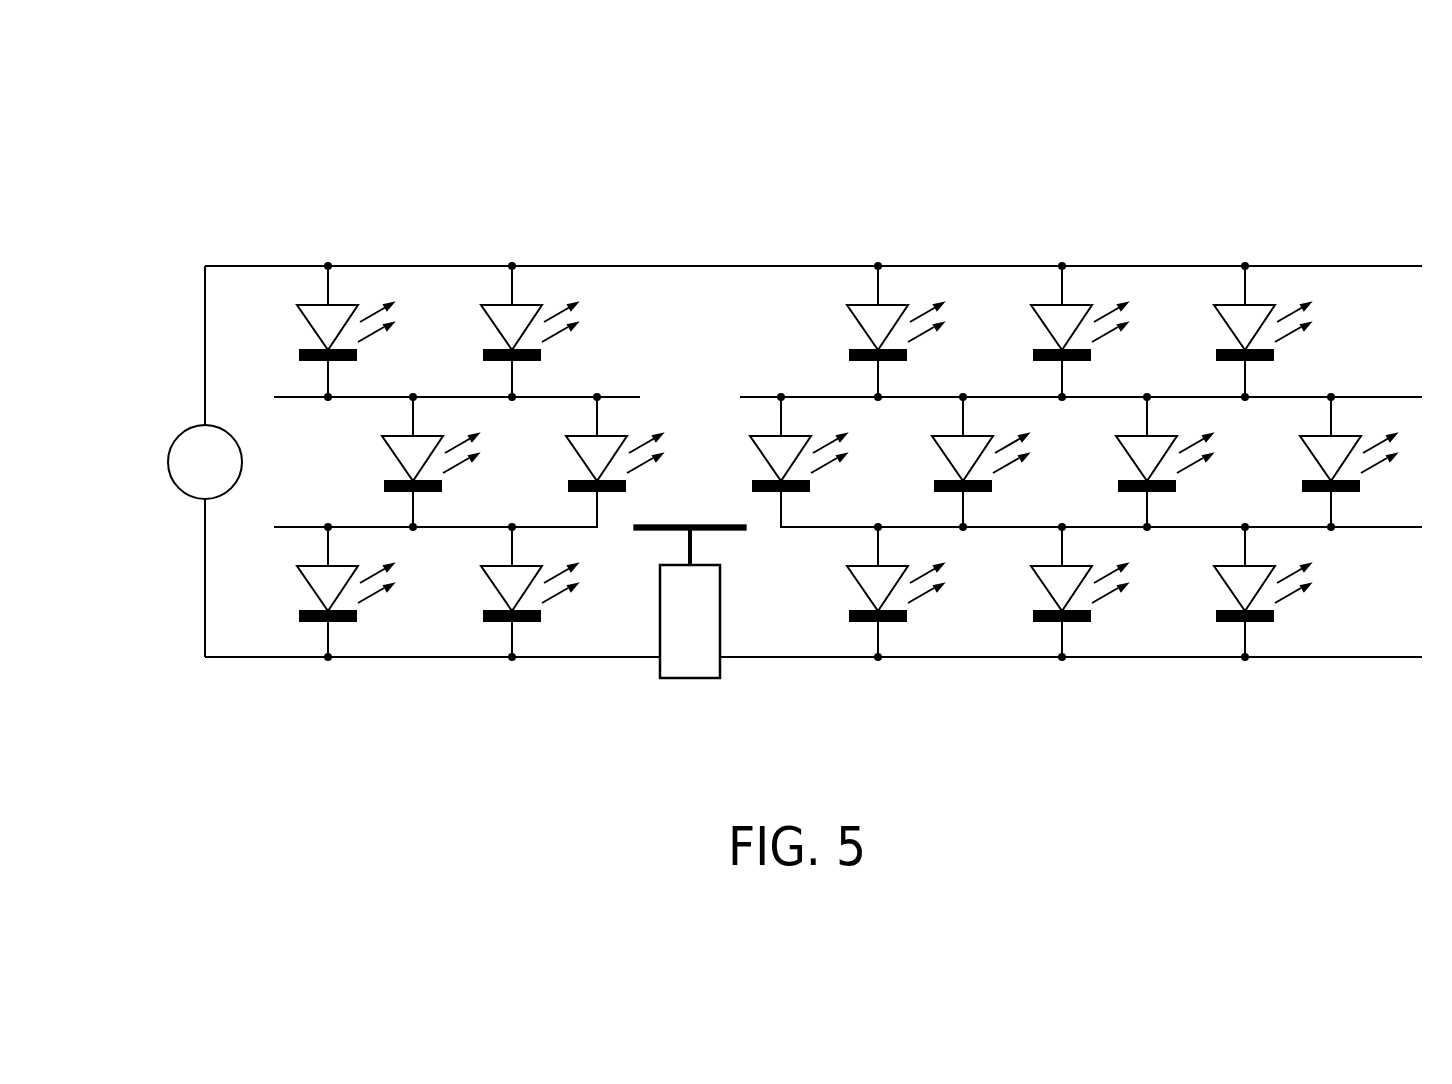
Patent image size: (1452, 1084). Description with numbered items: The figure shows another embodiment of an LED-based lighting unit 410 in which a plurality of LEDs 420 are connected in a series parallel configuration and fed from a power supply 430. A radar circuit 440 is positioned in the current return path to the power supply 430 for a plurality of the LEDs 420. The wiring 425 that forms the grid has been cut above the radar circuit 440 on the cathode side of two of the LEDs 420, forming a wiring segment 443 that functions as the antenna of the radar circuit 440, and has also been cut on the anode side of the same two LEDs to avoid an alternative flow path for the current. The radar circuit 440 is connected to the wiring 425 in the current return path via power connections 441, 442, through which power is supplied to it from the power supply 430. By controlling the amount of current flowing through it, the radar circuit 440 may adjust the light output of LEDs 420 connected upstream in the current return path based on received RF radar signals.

The LED-based lighting unit 410 is at (1328, 210).
The LEDs 420 is at (315, 338).
The wiring 425 is at (970, 658).
The power supply 430 is at (176, 437).
The radar circuit 440 is at (690, 680).
The power connection 441 is at (720, 660).
The power connection 442 is at (660, 660).
The wiring segment 443 is at (678, 523).